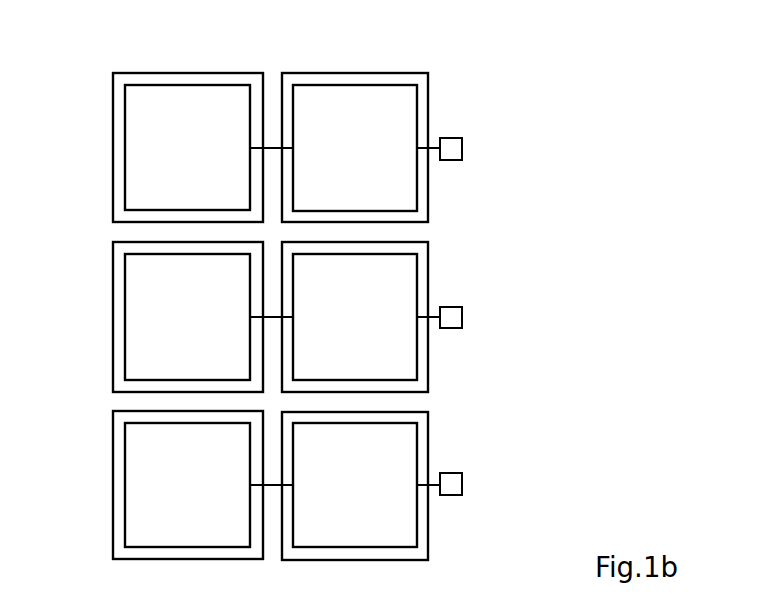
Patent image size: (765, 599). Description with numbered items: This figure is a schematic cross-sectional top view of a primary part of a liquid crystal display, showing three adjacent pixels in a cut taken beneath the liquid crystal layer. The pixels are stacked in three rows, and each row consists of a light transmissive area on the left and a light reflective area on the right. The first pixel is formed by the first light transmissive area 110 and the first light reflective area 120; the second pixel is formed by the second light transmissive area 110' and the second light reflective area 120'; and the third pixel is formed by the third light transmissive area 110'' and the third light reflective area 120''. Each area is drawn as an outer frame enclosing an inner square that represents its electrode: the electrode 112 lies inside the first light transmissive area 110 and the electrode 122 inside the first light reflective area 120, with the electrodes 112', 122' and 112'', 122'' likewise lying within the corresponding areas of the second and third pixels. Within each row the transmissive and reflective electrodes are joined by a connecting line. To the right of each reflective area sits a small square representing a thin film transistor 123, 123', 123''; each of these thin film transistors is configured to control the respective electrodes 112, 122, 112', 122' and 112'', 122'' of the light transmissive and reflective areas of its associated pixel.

The first light transmissive area 110 is at (188, 119).
The electrode 112 is at (149, 147).
The first light reflective area 120 is at (355, 120).
The electrode 122 is at (395, 148).
The thin film transistor 123 is at (474, 158).
The second light transmissive area 110' is at (154, 317).
The electrode 112' is at (147, 317).
The second light reflective area 120' is at (393, 309).
The electrode 122' is at (399, 317).
The thin film transistor 123' is at (477, 327).
The third light transmissive area 110'' is at (150, 485).
The electrode 112'' is at (143, 485).
The third light reflective area 120'' is at (397, 478).
The electrode 122'' is at (402, 485).
The thin film transistor 123'' is at (481, 493).